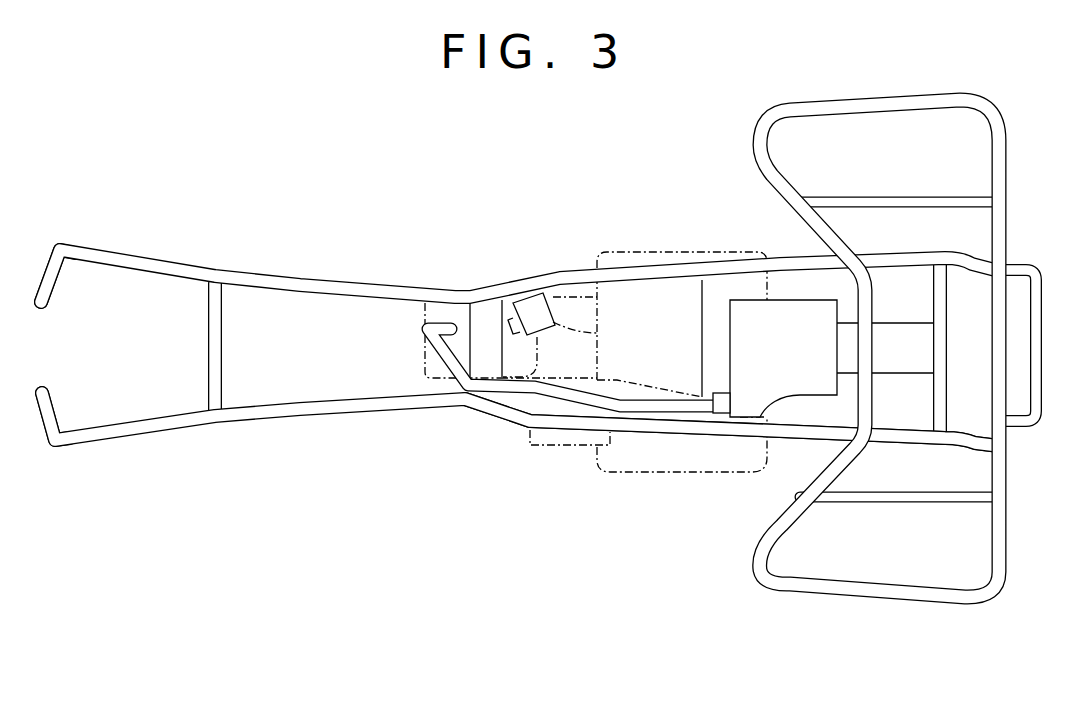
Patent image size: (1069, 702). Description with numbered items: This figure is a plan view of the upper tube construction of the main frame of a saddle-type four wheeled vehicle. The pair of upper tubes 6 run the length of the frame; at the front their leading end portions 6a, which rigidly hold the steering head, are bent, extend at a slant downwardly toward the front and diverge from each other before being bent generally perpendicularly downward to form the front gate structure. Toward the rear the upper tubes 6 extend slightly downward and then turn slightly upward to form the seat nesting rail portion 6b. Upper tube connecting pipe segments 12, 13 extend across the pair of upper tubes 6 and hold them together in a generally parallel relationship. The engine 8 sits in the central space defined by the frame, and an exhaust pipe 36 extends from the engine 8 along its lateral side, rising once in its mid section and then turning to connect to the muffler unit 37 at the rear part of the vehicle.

The upper tubes 6 is at (333, 278).
The leading end portions 6a is at (130, 440).
The seat nesting rail portion 6b is at (685, 425).
The engine 8 is at (487, 317).
The upper tube connecting pipe segment 12 is at (222, 385).
The upper tube connecting pipe segment 13 is at (943, 295).
The exhaust pipe 36 is at (500, 390).
The muffler unit 37 is at (798, 380).